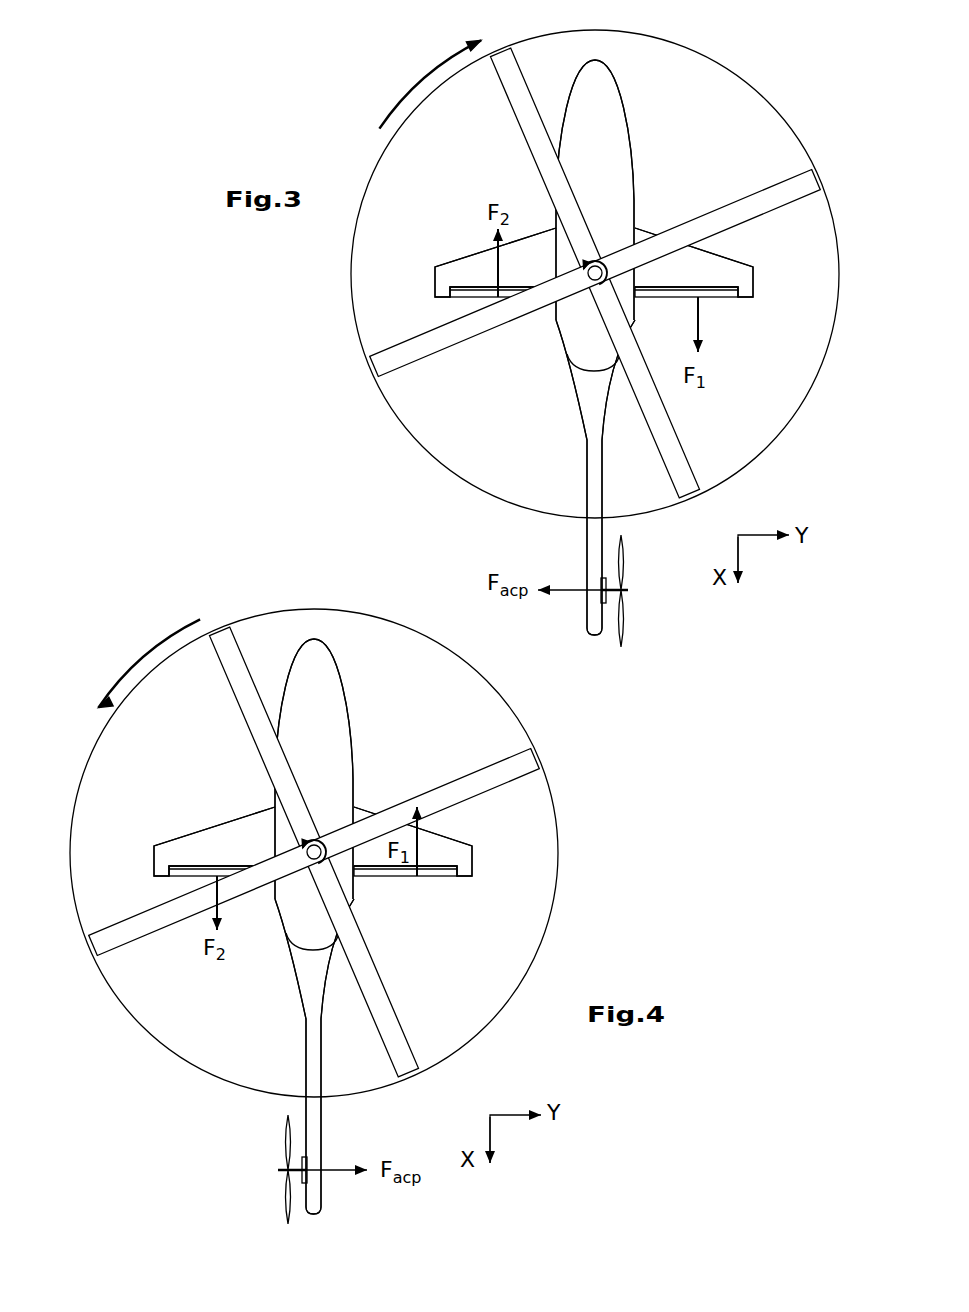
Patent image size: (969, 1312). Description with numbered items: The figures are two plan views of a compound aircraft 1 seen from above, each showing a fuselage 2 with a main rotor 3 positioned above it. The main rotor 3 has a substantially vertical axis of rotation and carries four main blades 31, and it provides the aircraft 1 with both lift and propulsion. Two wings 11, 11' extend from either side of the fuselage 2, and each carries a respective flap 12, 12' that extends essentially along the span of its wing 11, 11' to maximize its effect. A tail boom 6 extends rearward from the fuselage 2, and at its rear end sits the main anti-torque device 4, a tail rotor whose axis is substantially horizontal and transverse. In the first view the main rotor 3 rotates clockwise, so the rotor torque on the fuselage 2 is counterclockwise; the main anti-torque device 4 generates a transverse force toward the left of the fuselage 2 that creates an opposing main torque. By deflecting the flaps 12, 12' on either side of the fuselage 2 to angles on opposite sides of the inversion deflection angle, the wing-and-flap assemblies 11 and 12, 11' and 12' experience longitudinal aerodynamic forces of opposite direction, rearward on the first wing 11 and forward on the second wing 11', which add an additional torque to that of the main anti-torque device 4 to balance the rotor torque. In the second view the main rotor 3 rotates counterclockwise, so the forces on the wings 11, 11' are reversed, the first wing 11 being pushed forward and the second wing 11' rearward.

In FIG. 3, the compound aircraft 1 is at (369, 455).
In FIG. 4, the compound aircraft 1 is at (296, 926).
In FIG. 3, the fuselage 2 is at (635, 153).
In FIG. 4, the fuselage 2 is at (341, 794).
In FIG. 3, the main rotor 3 is at (741, 76).
In FIG. 4, the main rotor 3 is at (340, 853).
In FIG. 3, the main anti-torque device 4 is at (623, 623).
In FIG. 4, the main anti-torque device 4 is at (266, 1169).
In FIG. 3, the tail boom 6 is at (593, 473).
In FIG. 4, the tail boom 6 is at (303, 1056).
In FIG. 3, the first wing 11 is at (716, 262).
In FIG. 4, the first wing 11 is at (436, 841).
In FIG. 3, the second wing 11' is at (495, 227).
In FIG. 4, the second wing 11' is at (214, 813).
In FIG. 3, the flap 12 is at (703, 324).
In FIG. 4, the flap 12 is at (416, 903).
In FIG. 3, the flap 12' is at (503, 336).
In FIG. 4, the flap 12' is at (211, 829).
In FIG. 3, the main blades 31 is at (513, 92).
In FIG. 4, the main blades 31 is at (313, 824).